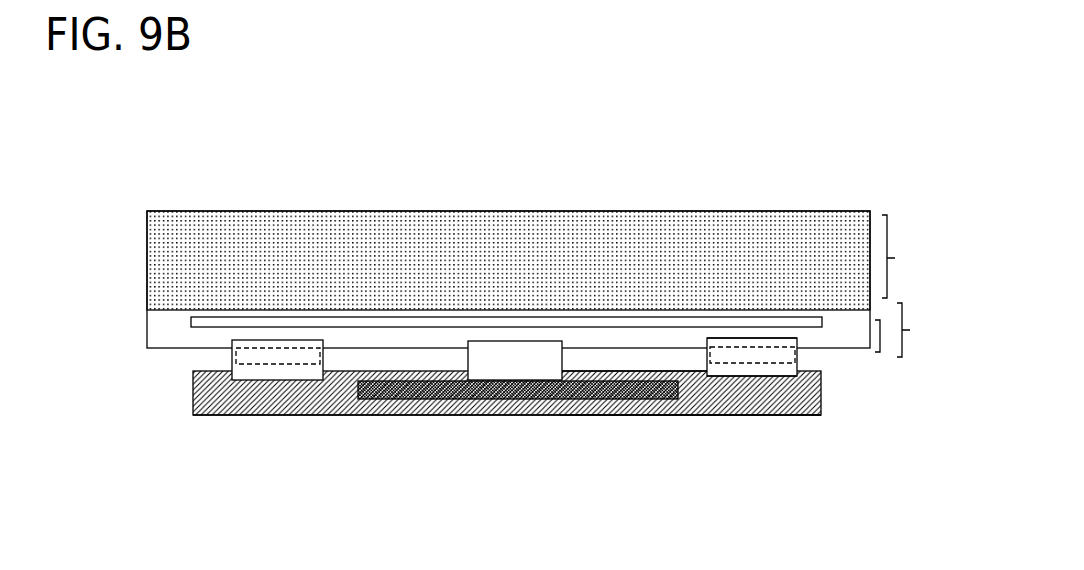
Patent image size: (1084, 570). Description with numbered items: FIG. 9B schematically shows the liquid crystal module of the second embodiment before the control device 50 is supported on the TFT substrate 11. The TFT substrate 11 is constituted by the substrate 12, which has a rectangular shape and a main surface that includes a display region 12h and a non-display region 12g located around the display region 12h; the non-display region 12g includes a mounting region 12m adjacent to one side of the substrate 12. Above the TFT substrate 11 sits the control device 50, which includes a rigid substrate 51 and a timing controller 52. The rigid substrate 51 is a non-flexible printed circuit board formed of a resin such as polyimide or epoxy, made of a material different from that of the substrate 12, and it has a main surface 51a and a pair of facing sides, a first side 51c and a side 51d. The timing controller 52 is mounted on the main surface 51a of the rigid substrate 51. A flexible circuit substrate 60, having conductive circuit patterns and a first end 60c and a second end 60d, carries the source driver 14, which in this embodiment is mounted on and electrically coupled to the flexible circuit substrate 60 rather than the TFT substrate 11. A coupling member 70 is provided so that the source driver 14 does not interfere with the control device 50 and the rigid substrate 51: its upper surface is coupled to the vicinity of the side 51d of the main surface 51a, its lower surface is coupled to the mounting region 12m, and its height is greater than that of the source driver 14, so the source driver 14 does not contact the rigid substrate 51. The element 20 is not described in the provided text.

The TFT substrate 11 is at (508, 326).
The substrate 12 is at (162, 348).
The non-display region 12g is at (930, 330).
The display region 12h is at (909, 256).
The mounting region 12m is at (880, 337).
The source driver 14 is at (616, 342).
The display panel 20 is at (218, 232).
The control device 50 is at (507, 441).
The rigid substrate 51 is at (350, 395).
The main surface 51a is at (292, 418).
The side 51c is at (645, 362).
The side 51d is at (635, 420).
The timing controller 52 is at (430, 399).
The flexible circuit substrate 60 is at (727, 377).
The first end 60c is at (770, 388).
The second end 60d is at (744, 328).
The coupling member 70 is at (529, 327).